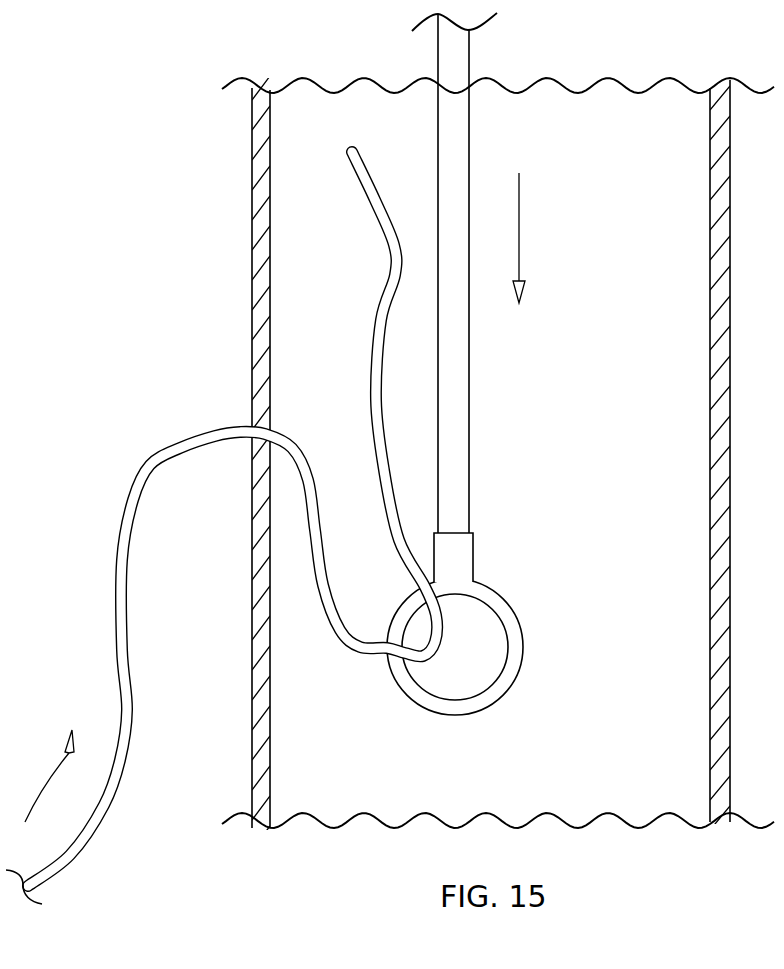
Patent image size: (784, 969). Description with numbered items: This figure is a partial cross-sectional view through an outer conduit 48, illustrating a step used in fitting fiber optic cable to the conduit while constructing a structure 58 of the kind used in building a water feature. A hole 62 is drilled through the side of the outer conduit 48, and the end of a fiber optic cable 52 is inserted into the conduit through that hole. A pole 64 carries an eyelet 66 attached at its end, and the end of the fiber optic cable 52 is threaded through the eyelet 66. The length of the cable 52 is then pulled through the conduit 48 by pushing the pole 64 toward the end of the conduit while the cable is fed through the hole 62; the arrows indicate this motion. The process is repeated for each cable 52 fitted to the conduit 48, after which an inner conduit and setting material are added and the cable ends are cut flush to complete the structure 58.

The outer conduit 48 is at (730, 150).
The fiber optic cable 52 is at (97, 832).
The structure 58 is at (0, 74).
The hole 62 is at (221, 528).
The pole 64 is at (462, 57).
The eyelet 66 is at (495, 685).